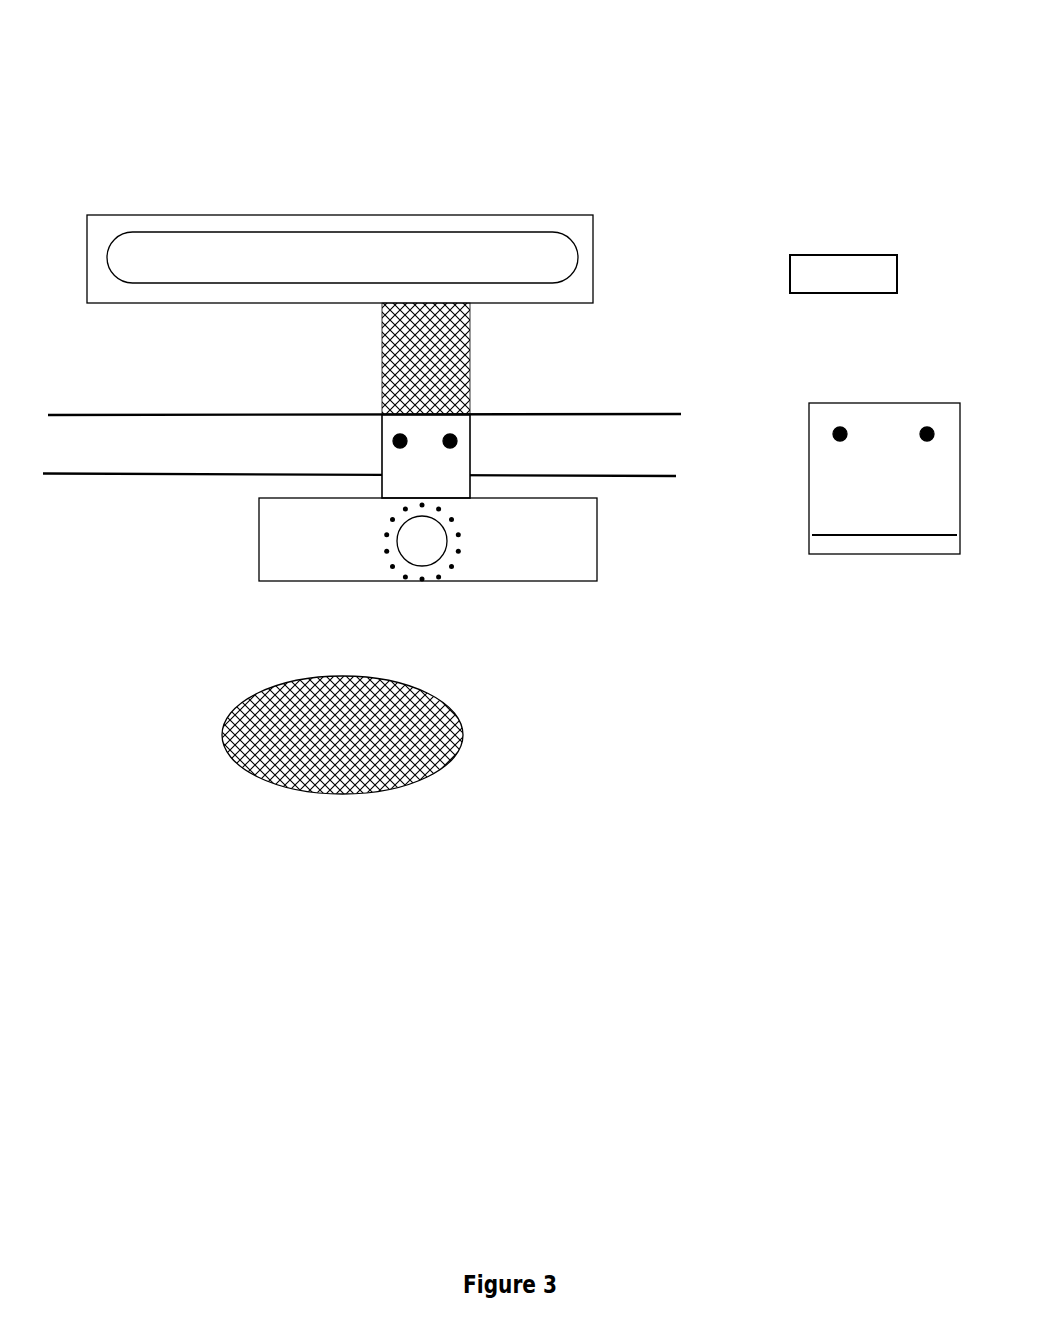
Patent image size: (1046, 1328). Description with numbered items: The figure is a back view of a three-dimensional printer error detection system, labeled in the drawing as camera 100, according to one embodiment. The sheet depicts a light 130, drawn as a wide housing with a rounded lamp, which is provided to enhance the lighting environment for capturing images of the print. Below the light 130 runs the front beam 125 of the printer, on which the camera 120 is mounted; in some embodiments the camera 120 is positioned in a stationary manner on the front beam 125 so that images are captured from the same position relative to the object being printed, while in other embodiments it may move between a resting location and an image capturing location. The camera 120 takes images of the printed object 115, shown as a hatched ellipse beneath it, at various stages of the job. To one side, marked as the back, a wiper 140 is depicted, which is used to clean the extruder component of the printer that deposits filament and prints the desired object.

The camera 100 is at (518, 72).
The light 130 is at (600, 278).
The front beam 125 is at (158, 405).
The camera 120 is at (255, 568).
The wiper 140 is at (905, 561).
The 3D object 115 is at (223, 751).